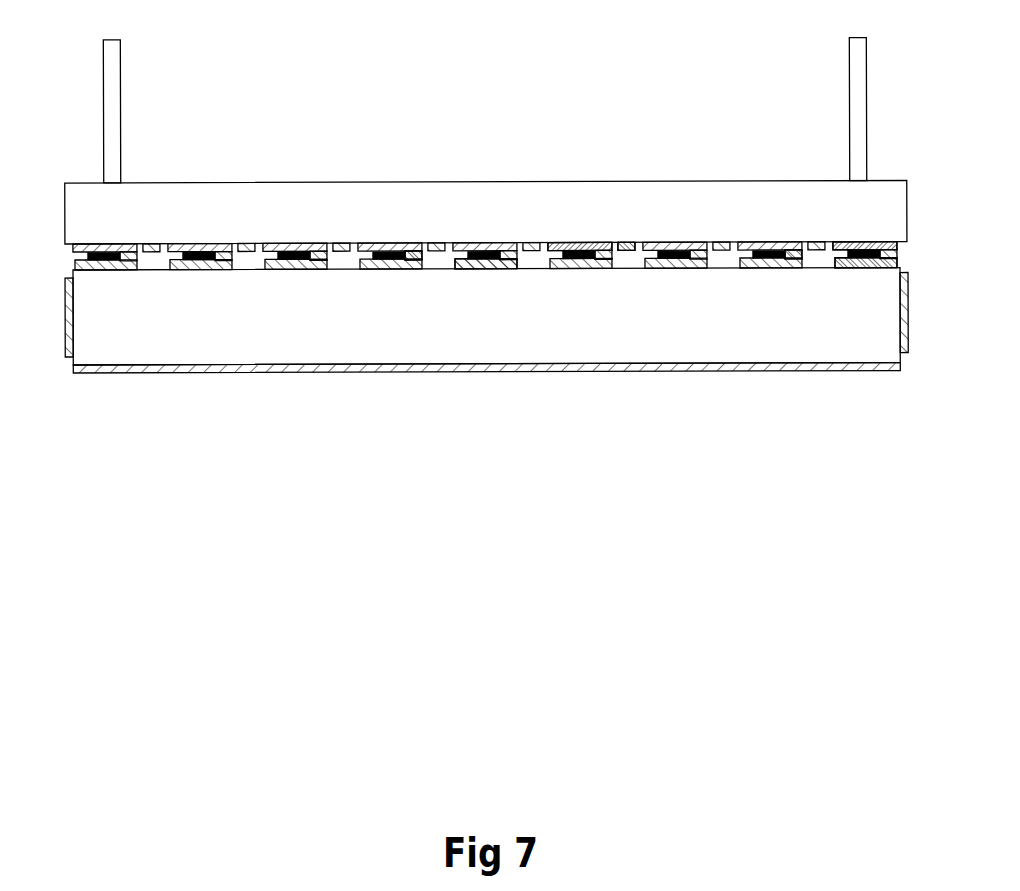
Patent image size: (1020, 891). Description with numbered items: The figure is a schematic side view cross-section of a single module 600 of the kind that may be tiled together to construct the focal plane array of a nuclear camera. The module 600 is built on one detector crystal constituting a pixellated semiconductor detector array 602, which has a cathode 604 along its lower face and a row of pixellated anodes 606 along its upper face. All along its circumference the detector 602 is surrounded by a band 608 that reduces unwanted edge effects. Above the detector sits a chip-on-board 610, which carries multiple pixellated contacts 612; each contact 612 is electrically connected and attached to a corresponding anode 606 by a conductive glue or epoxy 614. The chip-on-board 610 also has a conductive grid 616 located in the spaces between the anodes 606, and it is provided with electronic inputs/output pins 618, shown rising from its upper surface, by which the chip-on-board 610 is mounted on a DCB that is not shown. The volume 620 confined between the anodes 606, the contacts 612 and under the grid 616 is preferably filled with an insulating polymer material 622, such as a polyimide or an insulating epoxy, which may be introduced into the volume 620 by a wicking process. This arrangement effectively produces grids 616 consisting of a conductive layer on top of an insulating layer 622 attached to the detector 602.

The module 600 is at (477, 236).
The pixellated semiconductor detector array 602 is at (280, 350).
The cathode 604 is at (420, 372).
The pixellated anodes 606 is at (580, 267).
The band 608 is at (66, 326).
The chip-on-board 610 is at (667, 188).
The pixellated contacts 612 is at (580, 243).
The conductive glue or epoxy 614 is at (870, 247).
The conductive grid 616 is at (630, 243).
The volume 620 is at (822, 260).
The insulating polymer material 622 is at (438, 258).
The electronic inputs/output pins 618 is at (857, 70).